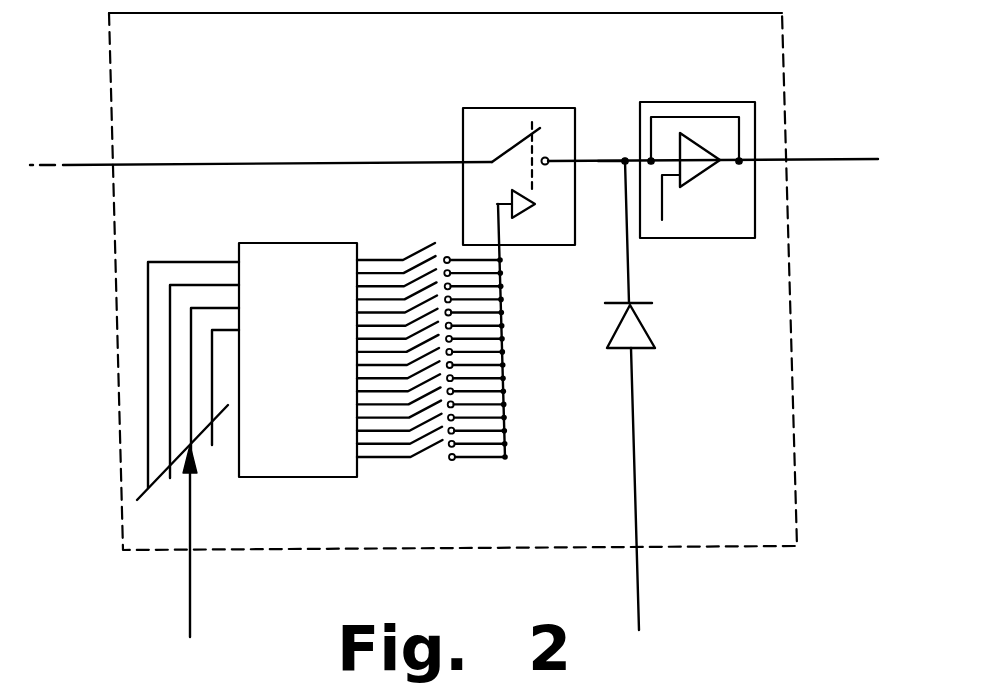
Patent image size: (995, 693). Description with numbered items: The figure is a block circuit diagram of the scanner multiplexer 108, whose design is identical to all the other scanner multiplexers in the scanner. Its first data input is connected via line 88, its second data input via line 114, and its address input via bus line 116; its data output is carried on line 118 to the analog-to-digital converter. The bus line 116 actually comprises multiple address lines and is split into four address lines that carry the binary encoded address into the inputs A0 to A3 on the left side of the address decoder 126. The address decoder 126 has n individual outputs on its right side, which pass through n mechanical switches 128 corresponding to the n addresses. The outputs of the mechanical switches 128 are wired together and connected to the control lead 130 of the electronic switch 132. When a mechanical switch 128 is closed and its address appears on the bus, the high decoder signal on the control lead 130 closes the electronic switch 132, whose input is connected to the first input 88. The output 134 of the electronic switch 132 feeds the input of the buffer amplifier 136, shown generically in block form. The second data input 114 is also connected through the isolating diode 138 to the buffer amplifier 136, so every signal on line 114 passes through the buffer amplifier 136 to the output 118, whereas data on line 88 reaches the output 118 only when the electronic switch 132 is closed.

The line 88 is at (80, 166).
The scanner multiplexer 108 is at (792, 372).
The line 114 is at (640, 588).
The bus line 116 is at (193, 593).
The line 118 is at (847, 155).
The address decoder 126 is at (327, 263).
The mechanical switches 128 is at (418, 242).
The control lead 130 is at (503, 252).
The electronic switch 132 is at (578, 228).
The output 134 is at (597, 157).
The buffer amplifier 136 is at (733, 227).
The isolating diode 138 is at (638, 330).